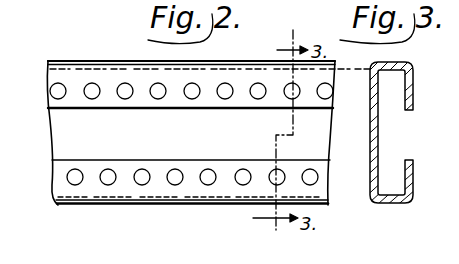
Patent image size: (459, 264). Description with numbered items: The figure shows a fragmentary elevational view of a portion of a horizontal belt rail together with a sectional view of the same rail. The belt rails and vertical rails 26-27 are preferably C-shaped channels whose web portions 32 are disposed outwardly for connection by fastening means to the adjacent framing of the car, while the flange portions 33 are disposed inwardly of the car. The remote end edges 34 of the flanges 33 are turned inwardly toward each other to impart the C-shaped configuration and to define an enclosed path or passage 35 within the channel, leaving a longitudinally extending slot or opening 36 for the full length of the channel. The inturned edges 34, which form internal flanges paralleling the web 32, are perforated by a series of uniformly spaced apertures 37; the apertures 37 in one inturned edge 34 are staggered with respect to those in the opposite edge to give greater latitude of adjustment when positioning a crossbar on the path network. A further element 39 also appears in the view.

In FIG. 2, the belt rails and vertical rails 26-27 is at (73, 61).
In FIG. 3, the belt rails and vertical rails 26-27 is at (405, 64).
In FIG. 2, the web portion 32 is at (163, 143).
In FIG. 3, the web portion 32 is at (371, 121).
In FIG. 2, the flange portion 33 is at (212, 68).
In FIG. 3, the flange portion 33 is at (386, 62).
In FIG. 2, the inturned edge 34 is at (108, 80).
In FIG. 3, the inturned edge 34 is at (412, 78).
In FIG. 3, the enclosed path or passage 35 is at (388, 183).
In FIG. 2, the longitudinally extending slot 36 is at (137, 111).
In FIG. 3, the longitudinally extending slot 36 is at (409, 160).
In FIG. 2, the apertures 37 is at (259, 86).
In FIG. 3, the apertures 37 is at (412, 94).
In FIG. 3, the adjacent member 39 is at (442, 239).